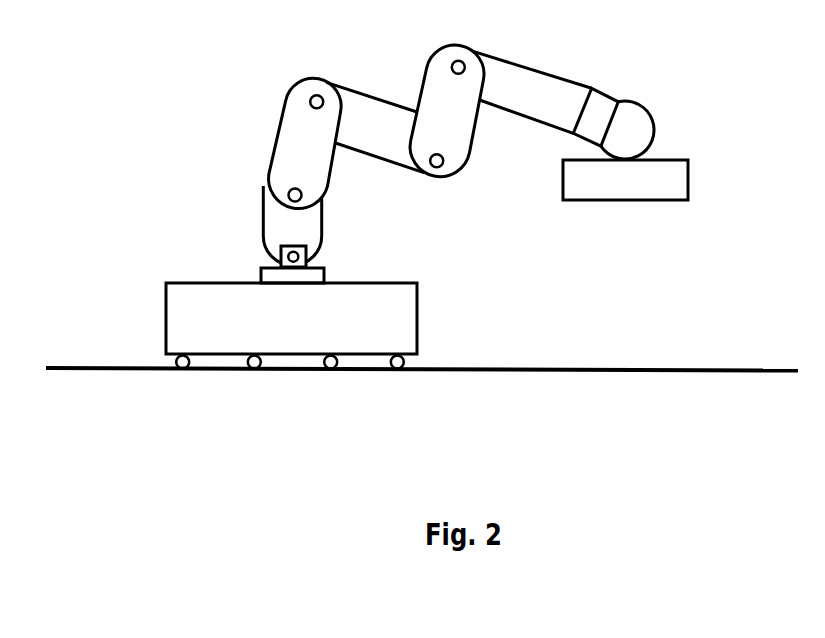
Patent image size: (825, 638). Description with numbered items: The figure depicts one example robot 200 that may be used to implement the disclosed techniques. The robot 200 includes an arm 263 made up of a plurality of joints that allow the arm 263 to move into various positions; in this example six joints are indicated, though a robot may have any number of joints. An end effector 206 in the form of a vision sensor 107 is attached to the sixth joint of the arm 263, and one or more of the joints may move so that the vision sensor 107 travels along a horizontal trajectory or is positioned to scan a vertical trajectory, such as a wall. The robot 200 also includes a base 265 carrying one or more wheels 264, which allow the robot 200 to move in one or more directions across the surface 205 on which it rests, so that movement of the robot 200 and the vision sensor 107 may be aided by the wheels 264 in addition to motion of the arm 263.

The robot 200 is at (134, 111).
The arm 263 is at (546, 57).
The end effector 206 is at (677, 112).
The vision sensor 107 is at (683, 138).
The base 265 is at (393, 282).
The wheels 264 is at (188, 368).
The floor surface 205 is at (577, 367).